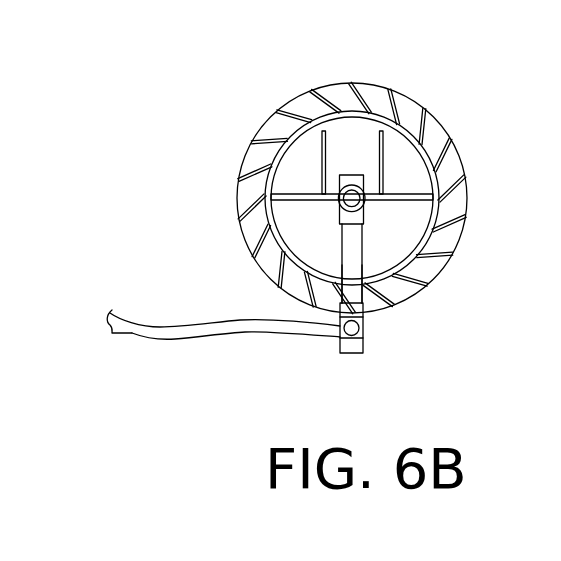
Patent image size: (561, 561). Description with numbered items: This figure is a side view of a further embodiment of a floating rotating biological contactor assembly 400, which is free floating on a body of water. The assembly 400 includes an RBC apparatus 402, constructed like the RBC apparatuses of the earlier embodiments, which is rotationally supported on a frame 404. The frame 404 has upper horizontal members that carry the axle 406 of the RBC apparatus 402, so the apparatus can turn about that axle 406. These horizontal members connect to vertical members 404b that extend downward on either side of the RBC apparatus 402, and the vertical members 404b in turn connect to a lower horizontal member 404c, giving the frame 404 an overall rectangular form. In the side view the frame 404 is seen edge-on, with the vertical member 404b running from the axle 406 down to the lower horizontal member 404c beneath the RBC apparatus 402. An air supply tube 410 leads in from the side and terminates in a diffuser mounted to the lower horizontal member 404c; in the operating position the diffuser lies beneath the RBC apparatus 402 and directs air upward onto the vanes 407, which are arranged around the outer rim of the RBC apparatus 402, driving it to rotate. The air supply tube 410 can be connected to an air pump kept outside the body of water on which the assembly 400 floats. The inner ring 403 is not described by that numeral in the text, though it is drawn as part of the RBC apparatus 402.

The assembly 400 is at (218, 190).
The RBC apparatus 402 is at (403, 98).
The inner ring 403 is at (257, 155).
The frame 404 is at (352, 266).
The vertical members 404b is at (352, 282).
The lower horizontal member 404c is at (363, 347).
The axle 406 is at (343, 203).
The vanes 407 is at (312, 94).
The air supply tube 410 is at (127, 334).